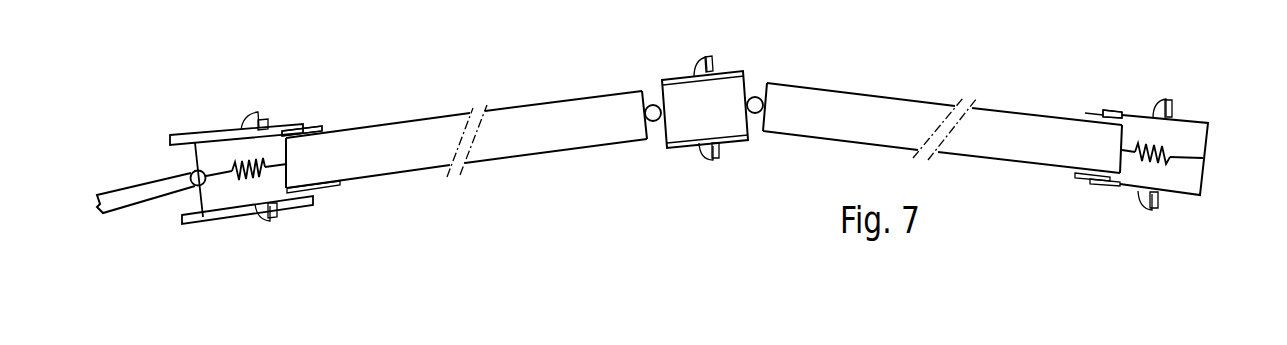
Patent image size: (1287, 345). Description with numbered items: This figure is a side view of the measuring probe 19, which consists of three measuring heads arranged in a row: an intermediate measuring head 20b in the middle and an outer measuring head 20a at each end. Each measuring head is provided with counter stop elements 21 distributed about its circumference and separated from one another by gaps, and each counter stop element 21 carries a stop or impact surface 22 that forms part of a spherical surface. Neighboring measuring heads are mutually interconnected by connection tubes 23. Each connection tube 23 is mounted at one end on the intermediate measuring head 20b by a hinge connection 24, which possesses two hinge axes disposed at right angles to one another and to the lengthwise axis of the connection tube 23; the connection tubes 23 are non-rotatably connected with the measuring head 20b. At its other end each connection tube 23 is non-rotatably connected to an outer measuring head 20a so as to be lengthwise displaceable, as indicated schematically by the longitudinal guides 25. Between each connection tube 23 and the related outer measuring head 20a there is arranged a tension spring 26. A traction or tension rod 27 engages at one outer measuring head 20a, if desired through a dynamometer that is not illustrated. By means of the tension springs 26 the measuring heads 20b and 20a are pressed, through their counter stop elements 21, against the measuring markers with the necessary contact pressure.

The measuring probe 19 is at (552, 55).
The outer measuring head 20a is at (290, 105).
The intermediate measuring head 20b is at (733, 65).
The counter stop element 21 is at (257, 114).
The stop surface 22 is at (250, 121).
The connection tube 23 is at (415, 118).
The hinge connection 24 is at (655, 128).
The longitudinal guide 25 is at (318, 128).
The tension spring 26 is at (235, 178).
The tension rod 27 is at (139, 192).